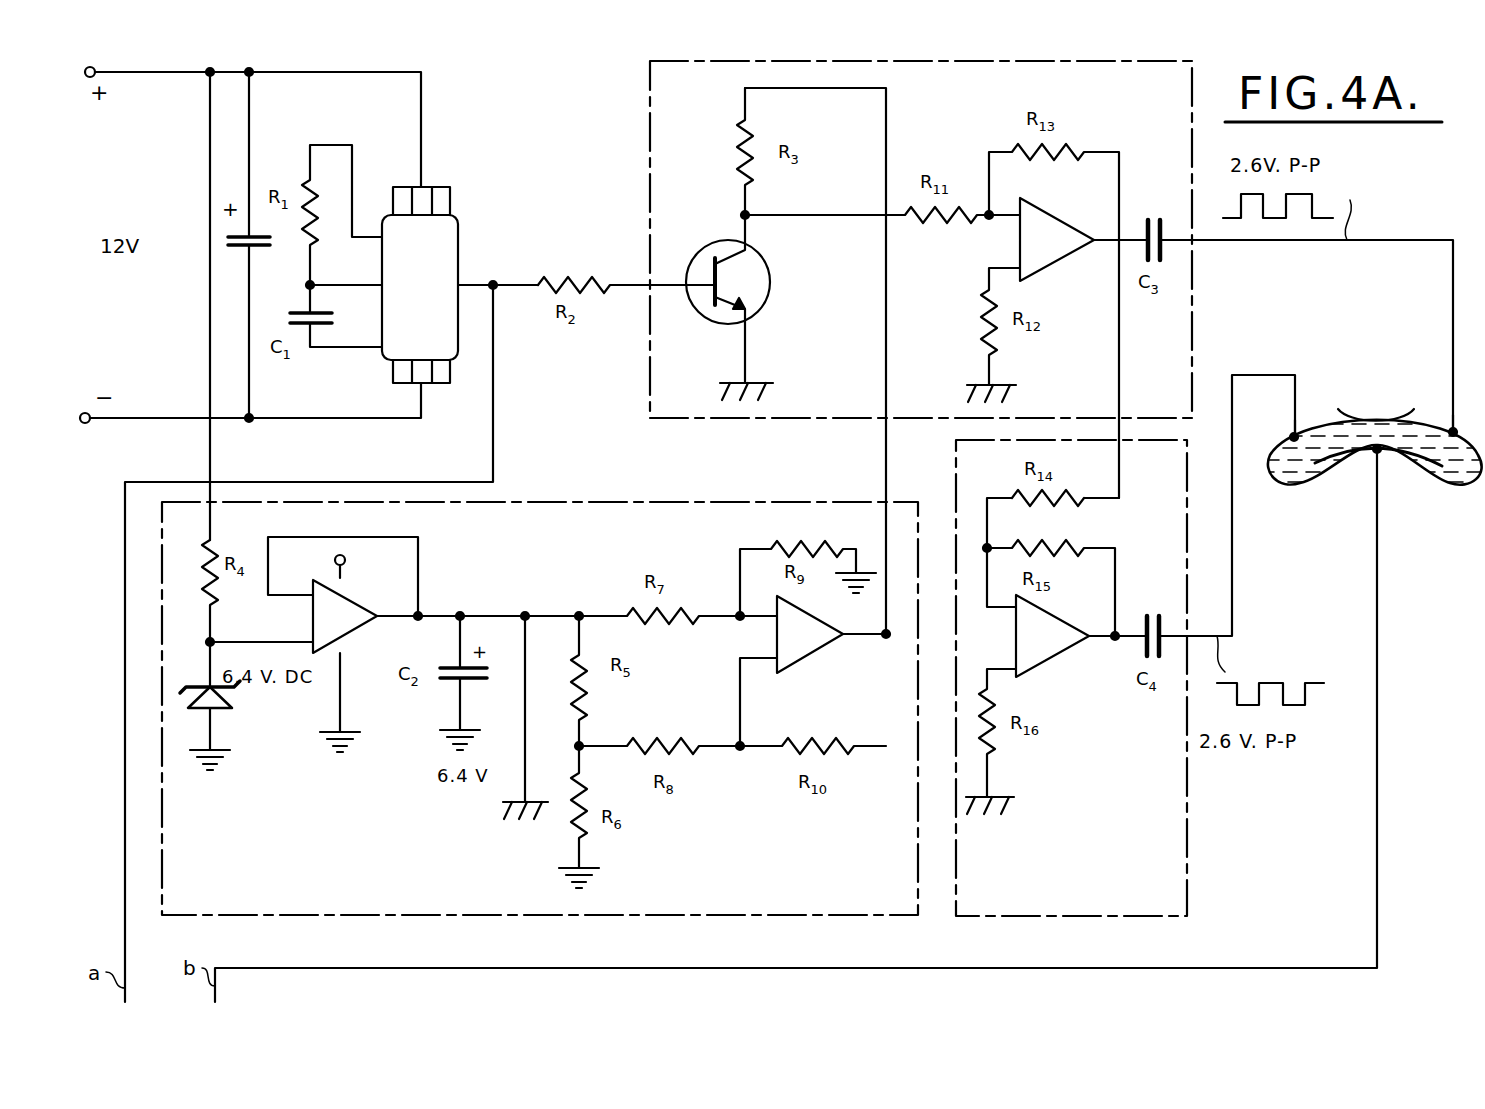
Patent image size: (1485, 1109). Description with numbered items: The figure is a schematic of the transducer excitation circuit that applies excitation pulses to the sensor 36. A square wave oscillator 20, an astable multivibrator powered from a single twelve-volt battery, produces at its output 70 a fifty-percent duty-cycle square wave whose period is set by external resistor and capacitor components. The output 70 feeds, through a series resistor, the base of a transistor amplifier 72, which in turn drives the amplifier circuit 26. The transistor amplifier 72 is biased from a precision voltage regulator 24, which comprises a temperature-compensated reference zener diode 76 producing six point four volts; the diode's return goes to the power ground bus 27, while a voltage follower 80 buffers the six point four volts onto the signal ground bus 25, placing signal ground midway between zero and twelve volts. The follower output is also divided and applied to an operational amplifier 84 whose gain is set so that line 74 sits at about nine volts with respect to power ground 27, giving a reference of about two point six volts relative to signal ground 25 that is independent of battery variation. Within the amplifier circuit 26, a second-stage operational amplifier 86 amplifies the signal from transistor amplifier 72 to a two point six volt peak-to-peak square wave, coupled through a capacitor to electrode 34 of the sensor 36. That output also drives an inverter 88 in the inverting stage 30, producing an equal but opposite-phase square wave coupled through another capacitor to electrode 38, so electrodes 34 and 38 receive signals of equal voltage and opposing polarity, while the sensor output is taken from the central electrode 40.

The square wave oscillator 20 is at (451, 188).
The output 70 is at (478, 285).
The transistor amplifier 72 is at (772, 290).
The line 74 is at (886, 466).
The amplifier circuit 26 is at (1192, 360).
The second stage operational amplifier 86 is at (1058, 216).
The precision voltage regulator 24 is at (578, 500).
The voltage follower 80 is at (353, 598).
The reference zener diode 76 is at (232, 702).
The bus 27 is at (207, 771).
The signal ground bus 25 is at (503, 806).
The operational amplifier 84 is at (812, 660).
The second output amplifier circuit 30 is at (1187, 800).
The inverter 88 is at (1062, 652).
The sensor 36 is at (1342, 478).
The electrode 38 is at (1293, 434).
The electrode 34 is at (1452, 431).
The central electrode 40 is at (1413, 458).